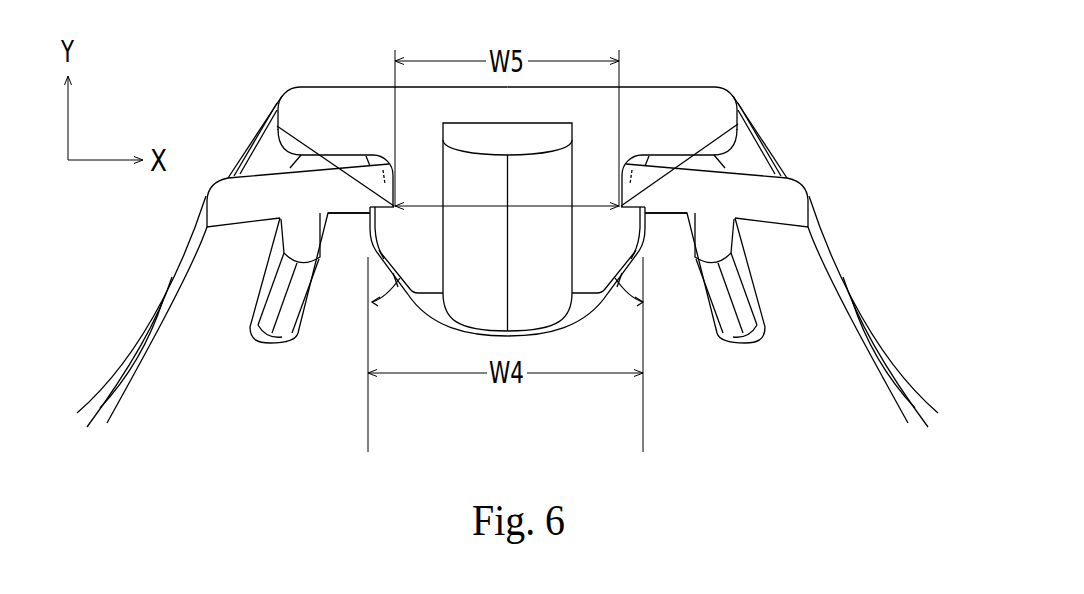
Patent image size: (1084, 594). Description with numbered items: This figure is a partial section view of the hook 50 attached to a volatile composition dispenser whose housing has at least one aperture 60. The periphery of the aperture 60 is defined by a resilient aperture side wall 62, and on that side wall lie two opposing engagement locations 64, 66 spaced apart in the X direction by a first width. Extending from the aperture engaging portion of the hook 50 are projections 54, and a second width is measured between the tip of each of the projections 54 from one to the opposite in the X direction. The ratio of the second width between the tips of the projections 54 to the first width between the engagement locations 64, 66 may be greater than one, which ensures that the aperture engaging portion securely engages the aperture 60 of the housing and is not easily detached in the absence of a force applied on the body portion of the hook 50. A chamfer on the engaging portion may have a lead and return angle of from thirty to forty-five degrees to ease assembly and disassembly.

The hook 50 is at (643, 101).
The projections 54 is at (387, 238).
The aperture 60 is at (507, 227).
The resilient aperture side wall 62 is at (385, 163).
The engagement location 64 is at (313, 156).
The engagement location 66 is at (739, 114).